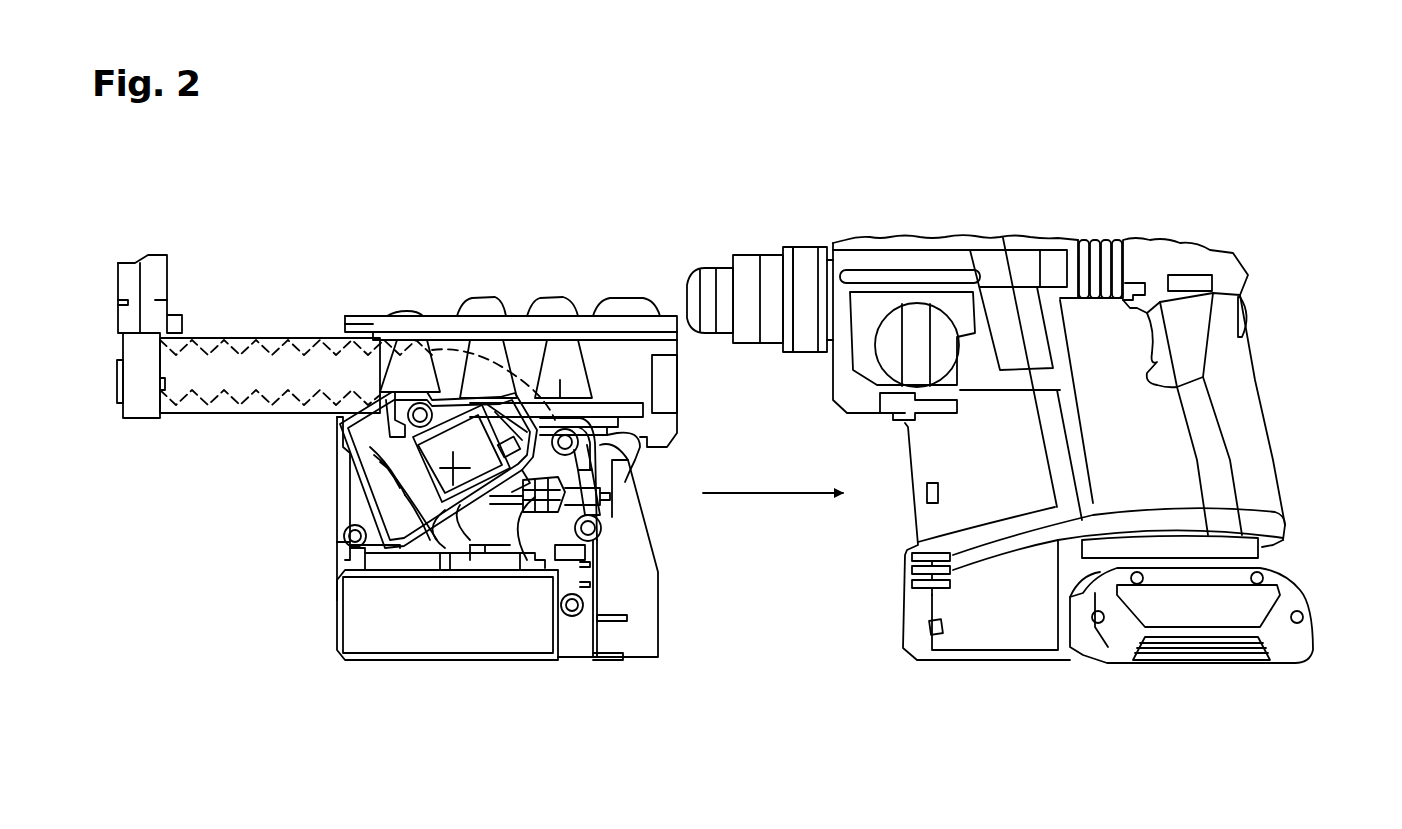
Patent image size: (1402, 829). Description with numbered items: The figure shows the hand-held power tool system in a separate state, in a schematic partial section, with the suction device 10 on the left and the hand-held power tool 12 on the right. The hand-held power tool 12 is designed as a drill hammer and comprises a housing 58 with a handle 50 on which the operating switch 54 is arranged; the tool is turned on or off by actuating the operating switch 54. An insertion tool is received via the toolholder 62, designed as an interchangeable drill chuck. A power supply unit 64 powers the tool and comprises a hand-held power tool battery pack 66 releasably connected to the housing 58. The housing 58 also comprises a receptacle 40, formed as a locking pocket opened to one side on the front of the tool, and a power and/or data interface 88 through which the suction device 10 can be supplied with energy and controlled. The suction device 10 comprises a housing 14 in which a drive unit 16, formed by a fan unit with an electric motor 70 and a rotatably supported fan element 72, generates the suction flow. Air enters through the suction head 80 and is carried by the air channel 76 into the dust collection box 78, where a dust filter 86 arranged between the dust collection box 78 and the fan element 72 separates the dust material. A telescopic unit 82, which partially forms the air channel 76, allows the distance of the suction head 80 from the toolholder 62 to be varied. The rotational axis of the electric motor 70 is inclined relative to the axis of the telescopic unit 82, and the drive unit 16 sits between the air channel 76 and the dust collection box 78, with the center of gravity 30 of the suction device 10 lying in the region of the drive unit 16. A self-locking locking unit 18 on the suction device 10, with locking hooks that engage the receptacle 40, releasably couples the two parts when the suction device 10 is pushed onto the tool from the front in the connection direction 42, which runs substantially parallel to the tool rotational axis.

The suction device 10 is at (319, 205).
The hand-held power tool 12 is at (970, 206).
The housing 14 is at (622, 637).
The drive unit 16 is at (361, 475).
The locking unit 18 is at (655, 497).
The center of gravity 30 is at (400, 553).
The receptacle 40 is at (927, 493).
The connection direction 42 is at (796, 495).
The handle 50 is at (1245, 410).
The operating switch 54 is at (1158, 350).
The housing 58 is at (1007, 527).
The toolholder 62 is at (752, 268).
The power supply unit 64 is at (1292, 530).
The hand-held power tool battery pack 66 is at (1203, 613).
The electric motor 70 is at (458, 420).
The fan element 72 is at (400, 502).
The air channel 76 is at (238, 345).
The dust collection box 78 is at (365, 637).
The suction head 80 is at (160, 268).
The telescopic unit 82 is at (318, 432).
The dust filter 86 is at (405, 630).
The power and/or data interface 88 is at (915, 575).